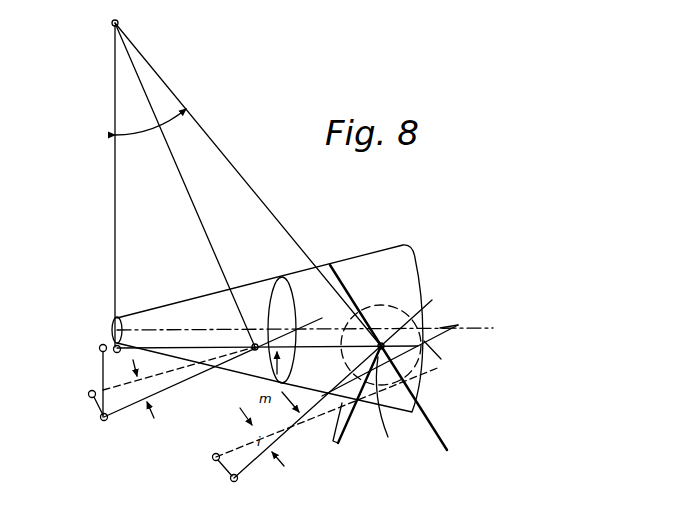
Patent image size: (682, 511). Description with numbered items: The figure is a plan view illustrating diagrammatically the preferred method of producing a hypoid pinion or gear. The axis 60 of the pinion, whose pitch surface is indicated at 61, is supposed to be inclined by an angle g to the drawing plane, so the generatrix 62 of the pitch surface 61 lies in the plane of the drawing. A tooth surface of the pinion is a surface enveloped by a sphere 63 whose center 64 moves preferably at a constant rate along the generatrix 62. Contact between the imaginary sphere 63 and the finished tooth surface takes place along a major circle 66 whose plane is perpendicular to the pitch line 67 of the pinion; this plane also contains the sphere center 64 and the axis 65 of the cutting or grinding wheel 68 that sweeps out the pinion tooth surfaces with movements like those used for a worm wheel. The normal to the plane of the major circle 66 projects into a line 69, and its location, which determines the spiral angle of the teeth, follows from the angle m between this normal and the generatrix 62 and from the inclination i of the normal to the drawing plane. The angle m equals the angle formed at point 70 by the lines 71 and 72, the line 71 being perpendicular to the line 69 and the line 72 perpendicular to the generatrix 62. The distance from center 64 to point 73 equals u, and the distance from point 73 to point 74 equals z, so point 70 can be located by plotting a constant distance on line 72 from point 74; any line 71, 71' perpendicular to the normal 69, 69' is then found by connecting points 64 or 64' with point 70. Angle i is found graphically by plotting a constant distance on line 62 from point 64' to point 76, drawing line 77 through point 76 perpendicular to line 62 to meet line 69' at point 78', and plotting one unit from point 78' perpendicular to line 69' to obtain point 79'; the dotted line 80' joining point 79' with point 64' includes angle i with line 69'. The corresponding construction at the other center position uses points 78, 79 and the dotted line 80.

The axis of the pinion 60 is at (470, 328).
The pitch surface 61 is at (380, 250).
The generatrix 62 is at (321, 347).
The sphere 63 is at (371, 306).
The center of the sphere 64 is at (425, 301).
The sphere center point 64' is at (254, 320).
The axis of the cutting or grinding wheel 65 is at (430, 425).
The major circle 66 is at (387, 427).
The pitch line 67 is at (418, 311).
The cutting or grinding wheel 68 is at (436, 345).
The line 69 is at (333, 389).
The line 69' is at (213, 367).
The point 70 is at (118, 21).
The line 71 is at (248, 184).
The line 71' is at (185, 185).
The line 72 is at (114, 205).
The point 73 is at (113, 347).
The point 74 is at (112, 330).
The point 76 is at (100, 349).
The line 77 is at (102, 376).
The point 78 is at (250, 489).
The point 78' is at (118, 429).
The point 79 is at (205, 467).
The point 79' is at (81, 408).
The dotted line 80 is at (321, 412).
The dotted line 80' is at (179, 368).